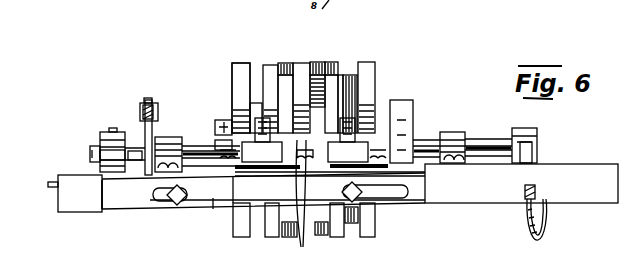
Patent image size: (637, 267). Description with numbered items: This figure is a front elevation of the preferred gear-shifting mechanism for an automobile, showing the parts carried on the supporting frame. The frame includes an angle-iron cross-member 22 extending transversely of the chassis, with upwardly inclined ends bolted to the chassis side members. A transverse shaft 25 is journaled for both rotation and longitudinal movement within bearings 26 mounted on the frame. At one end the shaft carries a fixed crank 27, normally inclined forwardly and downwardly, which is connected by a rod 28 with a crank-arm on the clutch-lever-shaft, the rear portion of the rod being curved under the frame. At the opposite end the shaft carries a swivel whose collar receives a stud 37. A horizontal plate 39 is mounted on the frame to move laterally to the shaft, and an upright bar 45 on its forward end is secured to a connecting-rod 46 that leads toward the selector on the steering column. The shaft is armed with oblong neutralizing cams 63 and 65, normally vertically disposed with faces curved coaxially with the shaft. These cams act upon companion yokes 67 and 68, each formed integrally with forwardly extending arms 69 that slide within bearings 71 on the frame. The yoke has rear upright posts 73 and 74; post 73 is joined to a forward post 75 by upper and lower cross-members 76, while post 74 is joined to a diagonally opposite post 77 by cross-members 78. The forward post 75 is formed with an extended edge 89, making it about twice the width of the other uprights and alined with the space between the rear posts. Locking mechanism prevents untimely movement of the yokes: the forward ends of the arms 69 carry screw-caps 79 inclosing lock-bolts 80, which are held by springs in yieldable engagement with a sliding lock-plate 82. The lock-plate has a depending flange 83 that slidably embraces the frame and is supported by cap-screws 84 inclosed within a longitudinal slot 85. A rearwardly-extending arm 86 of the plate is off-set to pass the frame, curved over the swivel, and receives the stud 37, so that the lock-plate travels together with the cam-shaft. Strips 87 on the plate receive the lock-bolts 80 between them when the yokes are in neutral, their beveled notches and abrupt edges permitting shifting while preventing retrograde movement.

The angle-iron cross-member 22 is at (338, 188).
The transverse shaft 25 is at (90, 153).
The bearing 26 is at (187, 142).
The fixed crank 27 is at (538, 140).
The rod 28 is at (527, 223).
The stud 37 is at (112, 129).
The horizontal plate 39 is at (48, 184).
The upright bar 45 is at (145, 134).
The connecting-rod 46 is at (158, 112).
The oblong cam 63 is at (250, 110).
The oblong cam 65 is at (414, 106).
The yoke 67 is at (229, 78).
The yoke 68 is at (382, 69).
The forwardly extending arm 69 is at (305, 140).
The bearing 71 is at (304, 201).
The rear upright post 73 is at (239, 63).
The rear upright post 74 is at (270, 64).
The forward post 75 is at (372, 61).
The cross-member 76 is at (328, 61).
The post 77 is at (306, 88).
The cross-member 78 is at (283, 62).
The screw-cap 79 is at (236, 130).
The lock-bolt 80 is at (243, 169).
The sliding lock-plate 82 is at (114, 179).
The depending flange 83 is at (117, 194).
The cap-screw 84 is at (178, 203).
The longitudinal slot 85 is at (214, 199).
The rearwardly-extending arm 86 is at (101, 133).
The strip 87 is at (233, 177).
The extended edge 89 is at (348, 77).